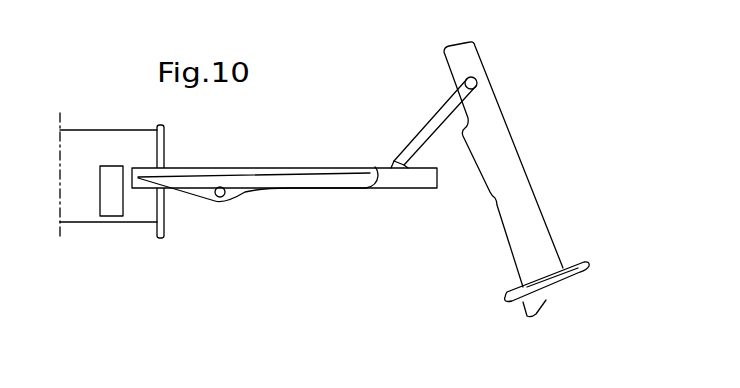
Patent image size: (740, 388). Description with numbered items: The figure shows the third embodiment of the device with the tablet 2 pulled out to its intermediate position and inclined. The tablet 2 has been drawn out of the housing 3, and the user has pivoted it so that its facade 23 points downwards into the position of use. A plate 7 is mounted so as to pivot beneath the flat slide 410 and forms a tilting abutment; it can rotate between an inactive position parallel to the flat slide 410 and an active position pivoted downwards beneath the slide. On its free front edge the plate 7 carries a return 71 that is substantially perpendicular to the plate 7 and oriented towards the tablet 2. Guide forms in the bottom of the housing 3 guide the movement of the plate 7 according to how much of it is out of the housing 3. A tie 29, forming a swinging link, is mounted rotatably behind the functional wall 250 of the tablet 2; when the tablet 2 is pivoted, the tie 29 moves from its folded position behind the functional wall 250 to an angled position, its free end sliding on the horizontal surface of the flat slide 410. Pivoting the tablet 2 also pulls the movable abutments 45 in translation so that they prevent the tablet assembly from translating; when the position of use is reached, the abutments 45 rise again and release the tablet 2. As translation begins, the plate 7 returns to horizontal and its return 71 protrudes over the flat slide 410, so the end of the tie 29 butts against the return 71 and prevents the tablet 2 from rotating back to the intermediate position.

The housing 3 is at (108, 130).
The movable abutments 45 is at (117, 222).
The flat slide 410 is at (295, 168).
The plate 7 is at (287, 189).
The return 71 is at (378, 171).
The tie 29 is at (431, 131).
The functional wall 250 is at (505, 133).
The tablet 2 is at (508, 228).
The facade 23 is at (547, 293).